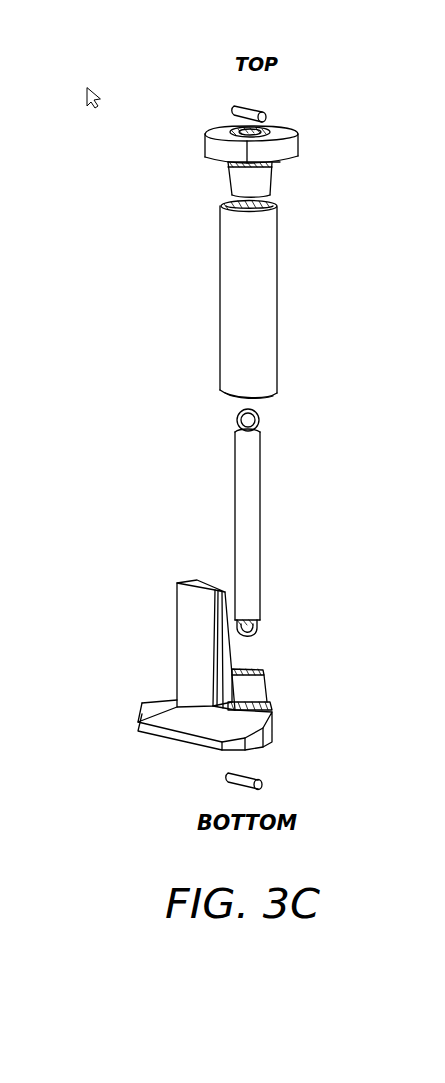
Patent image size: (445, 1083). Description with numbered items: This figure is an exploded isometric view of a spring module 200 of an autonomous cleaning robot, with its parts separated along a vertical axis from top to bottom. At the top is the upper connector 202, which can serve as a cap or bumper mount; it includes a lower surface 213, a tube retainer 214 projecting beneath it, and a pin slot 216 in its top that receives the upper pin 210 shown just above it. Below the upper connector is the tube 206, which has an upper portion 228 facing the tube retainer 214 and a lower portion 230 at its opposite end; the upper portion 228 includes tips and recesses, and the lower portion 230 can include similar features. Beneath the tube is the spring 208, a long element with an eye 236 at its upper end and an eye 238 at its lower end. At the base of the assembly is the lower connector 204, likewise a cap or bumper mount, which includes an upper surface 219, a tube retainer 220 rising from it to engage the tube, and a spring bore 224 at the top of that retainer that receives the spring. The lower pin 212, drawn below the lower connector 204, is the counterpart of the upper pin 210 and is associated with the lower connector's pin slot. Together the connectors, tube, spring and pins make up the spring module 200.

The spring module 200 is at (157, 105).
The upper connector 202 is at (282, 152).
The lower connector 204 is at (195, 726).
The tube 206 is at (260, 298).
The spring 208 is at (252, 500).
The upper pin 210 is at (248, 112).
The lower pin 212 is at (229, 778).
The lower surface 213 is at (280, 182).
The tube retainer 214 is at (243, 175).
The pin slot 216 is at (268, 130).
The upper surface 219 is at (255, 714).
The tube retainer 220 is at (258, 689).
The spring bore 224 is at (258, 670).
The upper portion 228 is at (275, 207).
The lower portion 230 is at (262, 400).
The eye 236 is at (258, 422).
The eye 238 is at (258, 627).